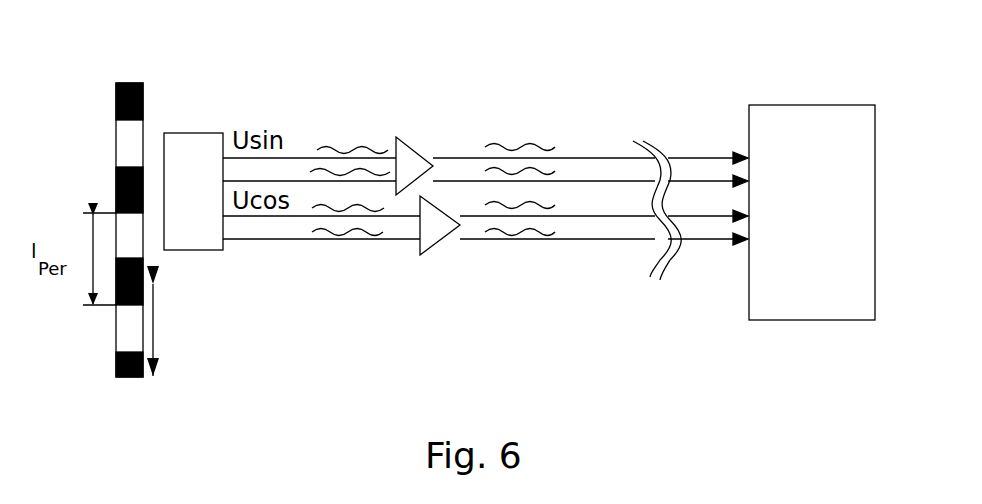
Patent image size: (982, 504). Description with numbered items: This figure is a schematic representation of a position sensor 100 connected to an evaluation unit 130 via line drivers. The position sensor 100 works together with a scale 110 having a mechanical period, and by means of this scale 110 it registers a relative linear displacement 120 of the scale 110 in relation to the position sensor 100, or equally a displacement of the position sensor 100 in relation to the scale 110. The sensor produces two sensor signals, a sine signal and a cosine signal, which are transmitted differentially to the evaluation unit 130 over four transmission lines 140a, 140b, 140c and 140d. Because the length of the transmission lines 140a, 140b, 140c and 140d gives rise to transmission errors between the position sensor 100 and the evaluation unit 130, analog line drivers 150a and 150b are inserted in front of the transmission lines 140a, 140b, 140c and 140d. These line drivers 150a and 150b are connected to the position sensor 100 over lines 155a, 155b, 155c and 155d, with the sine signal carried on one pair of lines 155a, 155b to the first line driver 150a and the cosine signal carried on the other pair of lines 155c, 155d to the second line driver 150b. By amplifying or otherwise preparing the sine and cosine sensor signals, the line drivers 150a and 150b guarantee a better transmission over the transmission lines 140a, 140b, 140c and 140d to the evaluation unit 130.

The position sensor 100 is at (187, 133).
The scale 110 is at (143, 100).
The relative linear displacement 120 is at (155, 342).
The evaluation unit 130 is at (803, 103).
The transmission line 140a is at (568, 157).
The transmission line 140b is at (700, 180).
The transmission line 140c is at (558, 217).
The transmission line 140d is at (700, 240).
The analog line driver 150a is at (416, 152).
The analog line driver 150b is at (437, 240).
The line 155a is at (296, 158).
The line 155b is at (295, 181).
The line 155c is at (405, 217).
The line 155d is at (263, 240).